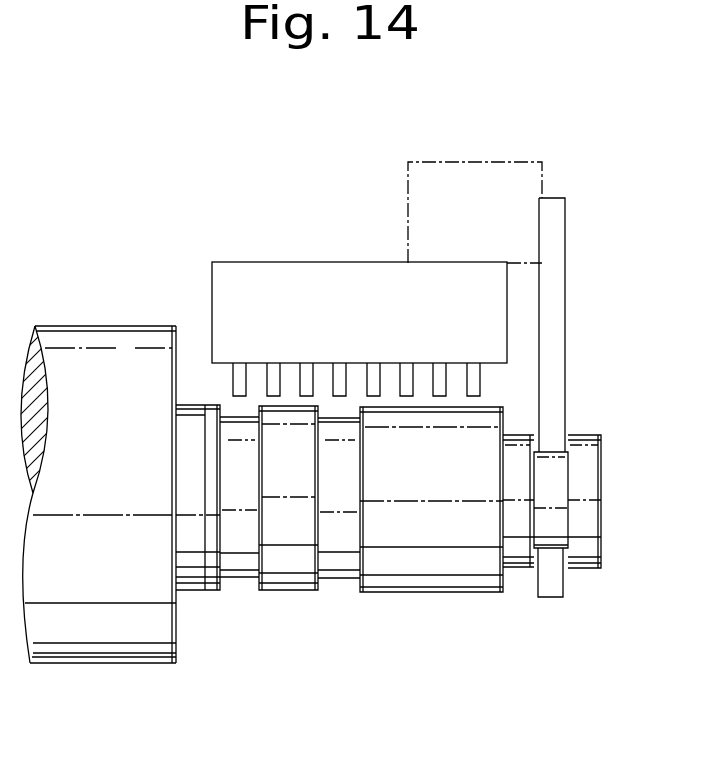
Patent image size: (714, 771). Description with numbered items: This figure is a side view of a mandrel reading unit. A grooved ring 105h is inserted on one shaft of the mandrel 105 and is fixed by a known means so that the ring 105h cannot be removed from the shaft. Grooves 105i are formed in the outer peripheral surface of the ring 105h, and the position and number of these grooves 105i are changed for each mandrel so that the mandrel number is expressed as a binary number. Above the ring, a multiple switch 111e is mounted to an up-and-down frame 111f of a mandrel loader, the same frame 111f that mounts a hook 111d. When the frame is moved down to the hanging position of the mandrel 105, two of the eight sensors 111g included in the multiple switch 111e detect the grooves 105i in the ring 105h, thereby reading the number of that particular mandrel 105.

The mandrel 105 is at (141, 666).
The grooves 105i is at (238, 580).
The grooved ring 105h is at (472, 594).
The multiple switch 111e is at (329, 262).
The up-and-down frame 111f is at (524, 160).
The sensors 111g is at (474, 388).
The hook 111d is at (567, 302).